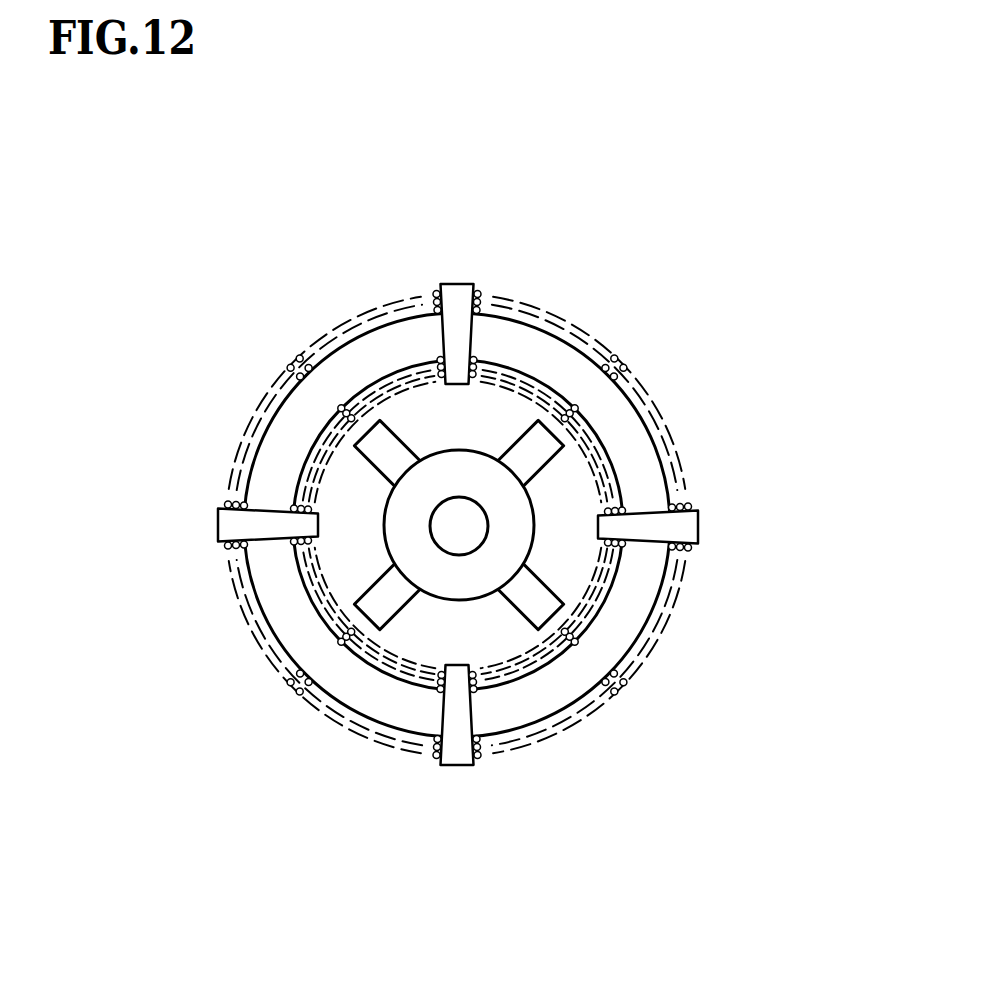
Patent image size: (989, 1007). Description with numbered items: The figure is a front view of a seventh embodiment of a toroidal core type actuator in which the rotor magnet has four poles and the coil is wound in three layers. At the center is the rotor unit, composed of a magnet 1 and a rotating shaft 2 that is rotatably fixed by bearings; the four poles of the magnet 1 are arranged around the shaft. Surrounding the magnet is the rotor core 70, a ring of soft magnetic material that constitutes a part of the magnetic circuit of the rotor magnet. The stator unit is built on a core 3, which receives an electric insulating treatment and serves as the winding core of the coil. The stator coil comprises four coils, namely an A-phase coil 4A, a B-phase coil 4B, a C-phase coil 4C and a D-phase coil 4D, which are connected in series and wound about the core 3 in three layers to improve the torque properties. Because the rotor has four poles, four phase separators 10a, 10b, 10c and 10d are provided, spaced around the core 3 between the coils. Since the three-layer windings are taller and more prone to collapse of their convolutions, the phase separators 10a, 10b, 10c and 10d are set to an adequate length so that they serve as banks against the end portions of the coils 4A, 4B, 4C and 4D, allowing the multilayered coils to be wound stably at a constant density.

The magnet 1 is at (523, 593).
The rotating shaft 2 is at (487, 517).
The core 3 is at (645, 498).
The rotor core 70 is at (410, 527).
The A-phase coil 4A is at (278, 376).
The B-phase coil 4B is at (643, 374).
The C-phase coil 4C is at (636, 684).
The D-phase coil 4D is at (280, 684).
The phase separator 10a is at (234, 527).
The phase separator 10b is at (454, 748).
The phase separator 10c is at (680, 529).
The phase separator 10d is at (449, 302).